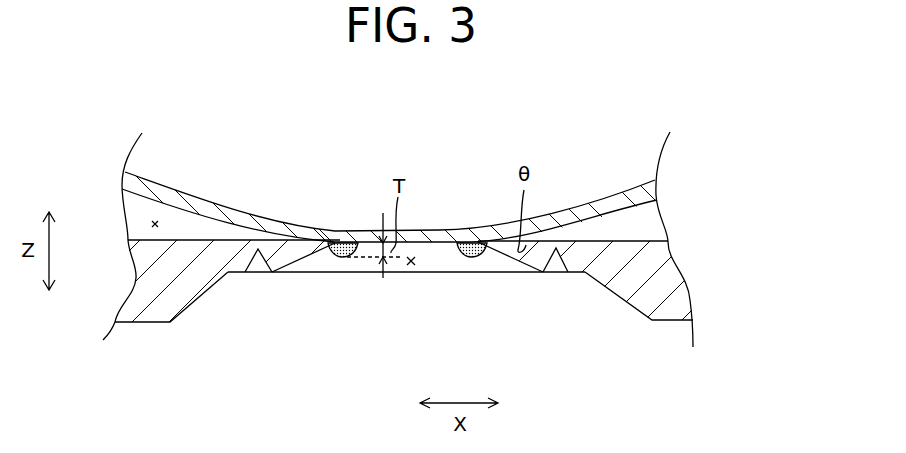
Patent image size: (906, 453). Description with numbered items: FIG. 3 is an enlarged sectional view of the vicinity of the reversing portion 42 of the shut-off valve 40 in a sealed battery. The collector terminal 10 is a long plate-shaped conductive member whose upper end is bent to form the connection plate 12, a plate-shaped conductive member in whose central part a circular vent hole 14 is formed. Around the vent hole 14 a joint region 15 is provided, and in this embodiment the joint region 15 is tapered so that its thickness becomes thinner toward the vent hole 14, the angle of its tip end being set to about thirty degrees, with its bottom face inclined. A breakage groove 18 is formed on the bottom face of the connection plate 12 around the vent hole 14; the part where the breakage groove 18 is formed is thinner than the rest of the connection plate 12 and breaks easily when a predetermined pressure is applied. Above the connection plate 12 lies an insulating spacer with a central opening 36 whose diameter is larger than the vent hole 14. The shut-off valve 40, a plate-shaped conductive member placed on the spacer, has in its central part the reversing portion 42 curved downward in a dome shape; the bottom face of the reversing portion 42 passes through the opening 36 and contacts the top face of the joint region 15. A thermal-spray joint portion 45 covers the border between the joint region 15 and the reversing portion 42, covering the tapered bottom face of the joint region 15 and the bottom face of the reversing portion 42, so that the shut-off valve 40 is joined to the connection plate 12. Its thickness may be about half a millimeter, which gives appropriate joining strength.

The collector terminal 10 is at (438, 266).
The connection plate 12 is at (630, 300).
The vent hole 14 is at (411, 266).
The joint region 15 is at (307, 262).
The breakage groove 18 is at (258, 268).
The opening 36 is at (155, 228).
The shut-off valve 40 is at (400, 189).
The reversing portion 42 is at (583, 212).
The thermal-spray joint portion 45 is at (337, 257).